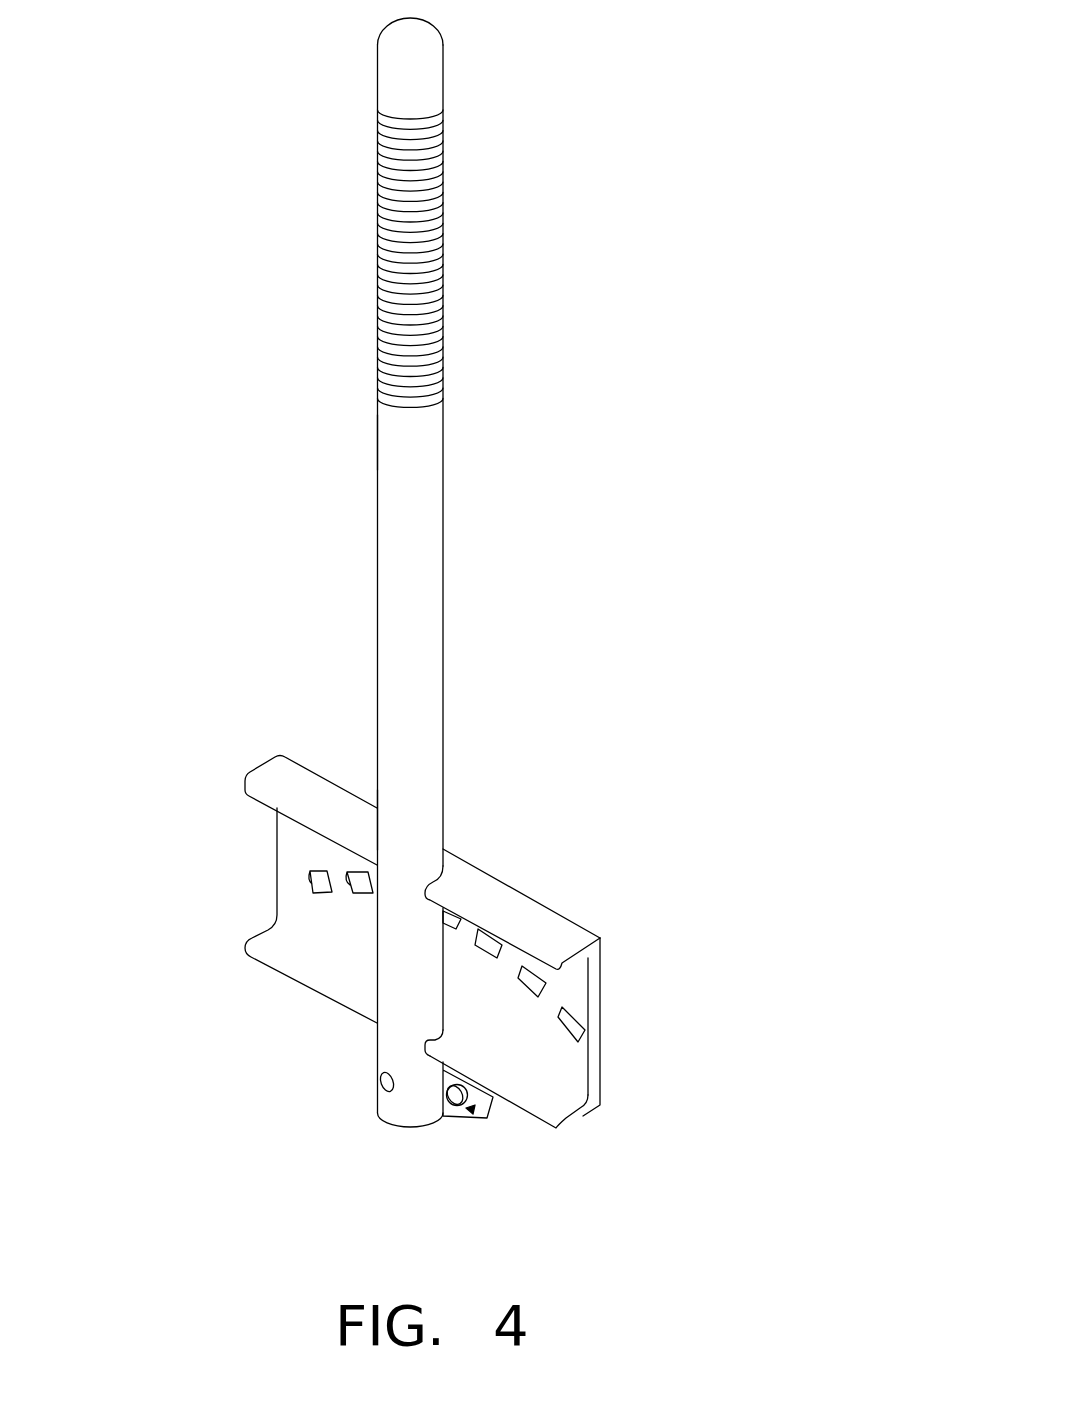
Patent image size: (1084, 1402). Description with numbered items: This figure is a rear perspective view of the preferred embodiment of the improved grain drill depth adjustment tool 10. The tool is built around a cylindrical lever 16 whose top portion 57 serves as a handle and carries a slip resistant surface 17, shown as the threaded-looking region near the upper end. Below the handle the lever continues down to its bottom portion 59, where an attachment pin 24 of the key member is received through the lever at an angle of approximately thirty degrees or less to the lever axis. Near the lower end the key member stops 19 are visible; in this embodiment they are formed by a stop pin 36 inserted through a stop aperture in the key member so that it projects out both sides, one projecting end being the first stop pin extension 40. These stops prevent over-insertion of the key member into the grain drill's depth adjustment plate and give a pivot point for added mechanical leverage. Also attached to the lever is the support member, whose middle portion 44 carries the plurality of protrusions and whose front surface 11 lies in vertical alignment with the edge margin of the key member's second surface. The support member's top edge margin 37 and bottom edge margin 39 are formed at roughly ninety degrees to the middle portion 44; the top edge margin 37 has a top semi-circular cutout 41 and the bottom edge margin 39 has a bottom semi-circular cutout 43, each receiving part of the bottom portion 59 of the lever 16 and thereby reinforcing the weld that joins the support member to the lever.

The improved grain drill depth adjustment tool 10 is at (508, 534).
The front surface 11 is at (605, 1036).
The lever 16 is at (405, 618).
The slip resistant surface 17 is at (438, 306).
The key member stops 19 is at (446, 1110).
The attachment pin 24 is at (387, 1083).
The stop pin 36 is at (468, 1107).
The top edge margin 37 is at (514, 911).
The bottom edge margin 39 is at (585, 1116).
The first stop pin extension 40 is at (474, 1105).
The top semi-circular cutout 41 is at (432, 881).
The bottom semi-circular cutout 43 is at (440, 1058).
The middle portion 44 is at (302, 900).
The top portion 57 is at (407, 440).
The bottom portion 59 is at (417, 828).